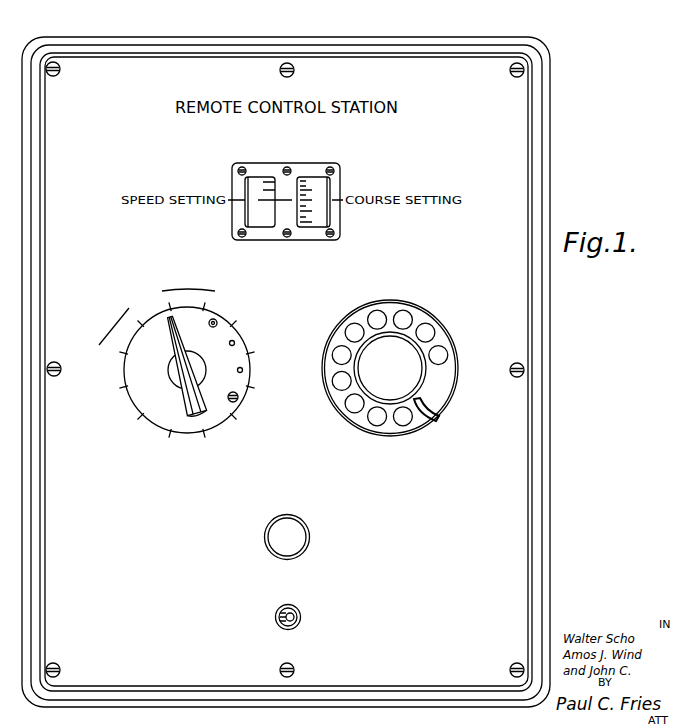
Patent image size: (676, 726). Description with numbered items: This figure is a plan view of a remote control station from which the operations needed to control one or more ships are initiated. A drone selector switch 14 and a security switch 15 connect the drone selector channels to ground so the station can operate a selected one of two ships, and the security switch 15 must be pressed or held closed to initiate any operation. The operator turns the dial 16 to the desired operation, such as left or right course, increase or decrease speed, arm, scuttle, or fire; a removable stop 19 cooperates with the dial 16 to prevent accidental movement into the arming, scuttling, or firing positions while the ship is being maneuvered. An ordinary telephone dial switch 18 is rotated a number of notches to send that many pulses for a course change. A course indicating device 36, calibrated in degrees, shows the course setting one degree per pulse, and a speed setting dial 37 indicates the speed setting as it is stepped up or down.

The drone selector switch 14 is at (298, 623).
The security switch 15 is at (303, 533).
The dial 16 is at (169, 365).
The telephone dial switch 18 is at (447, 326).
The removable stop 19 is at (210, 325).
The indicating device 36 is at (323, 190).
The speed setting dial 37 is at (250, 216).